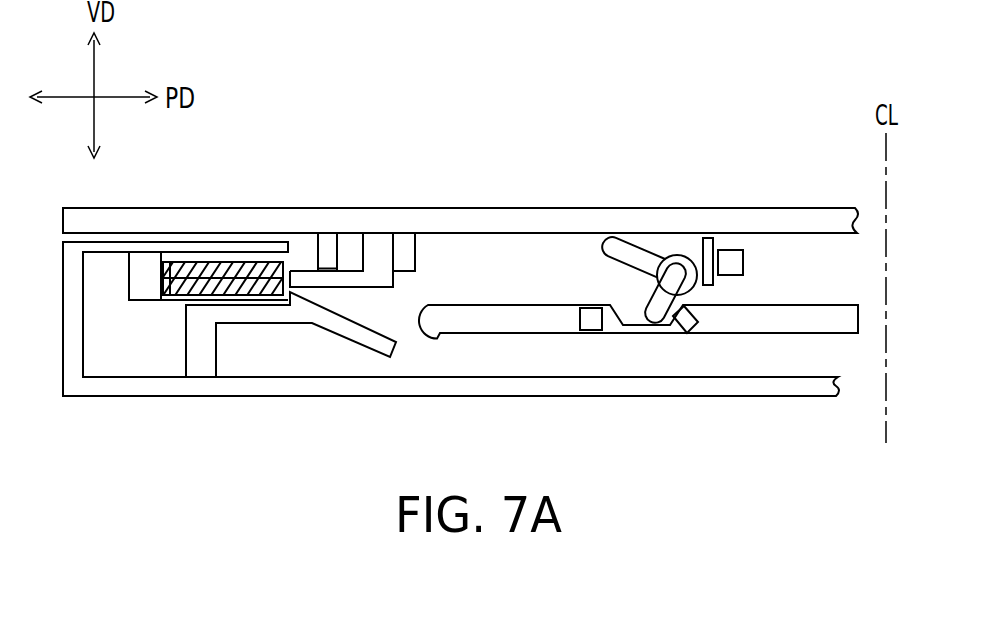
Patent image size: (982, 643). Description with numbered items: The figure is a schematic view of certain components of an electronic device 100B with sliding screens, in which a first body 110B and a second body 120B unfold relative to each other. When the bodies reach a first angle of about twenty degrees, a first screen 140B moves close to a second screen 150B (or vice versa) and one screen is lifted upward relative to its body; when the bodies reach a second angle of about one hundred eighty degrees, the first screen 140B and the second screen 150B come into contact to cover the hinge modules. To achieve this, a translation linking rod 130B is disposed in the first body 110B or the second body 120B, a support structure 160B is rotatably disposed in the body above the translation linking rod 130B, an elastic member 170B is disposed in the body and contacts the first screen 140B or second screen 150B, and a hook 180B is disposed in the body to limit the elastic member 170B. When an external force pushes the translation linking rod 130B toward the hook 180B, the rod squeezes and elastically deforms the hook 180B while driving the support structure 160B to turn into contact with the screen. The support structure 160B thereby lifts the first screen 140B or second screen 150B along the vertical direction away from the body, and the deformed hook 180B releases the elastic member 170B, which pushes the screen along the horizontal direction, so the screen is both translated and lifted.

The electronic device with sliding screens 100B is at (827, 462).
The first body 110B is at (451, 358).
The second body 120B is at (155, 383).
The translation linking rod 130B is at (718, 320).
The first screen 140B is at (460, 221).
The second screen 150B is at (520, 225).
The support structure 160B is at (677, 278).
The elastic member 170B is at (224, 265).
The hook 180B is at (298, 313).